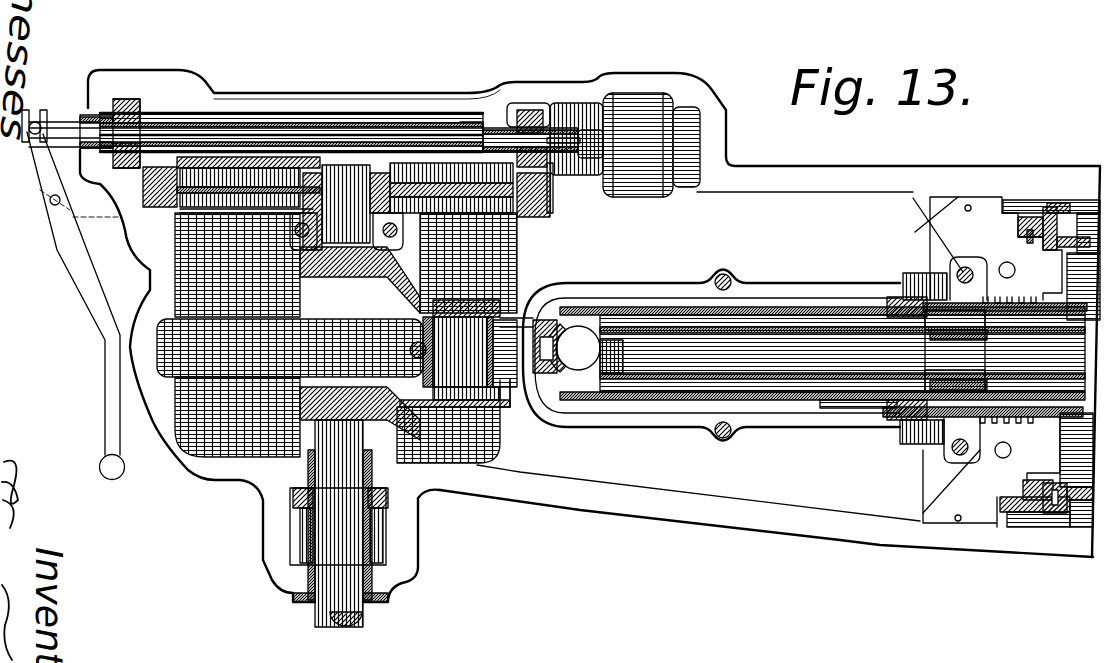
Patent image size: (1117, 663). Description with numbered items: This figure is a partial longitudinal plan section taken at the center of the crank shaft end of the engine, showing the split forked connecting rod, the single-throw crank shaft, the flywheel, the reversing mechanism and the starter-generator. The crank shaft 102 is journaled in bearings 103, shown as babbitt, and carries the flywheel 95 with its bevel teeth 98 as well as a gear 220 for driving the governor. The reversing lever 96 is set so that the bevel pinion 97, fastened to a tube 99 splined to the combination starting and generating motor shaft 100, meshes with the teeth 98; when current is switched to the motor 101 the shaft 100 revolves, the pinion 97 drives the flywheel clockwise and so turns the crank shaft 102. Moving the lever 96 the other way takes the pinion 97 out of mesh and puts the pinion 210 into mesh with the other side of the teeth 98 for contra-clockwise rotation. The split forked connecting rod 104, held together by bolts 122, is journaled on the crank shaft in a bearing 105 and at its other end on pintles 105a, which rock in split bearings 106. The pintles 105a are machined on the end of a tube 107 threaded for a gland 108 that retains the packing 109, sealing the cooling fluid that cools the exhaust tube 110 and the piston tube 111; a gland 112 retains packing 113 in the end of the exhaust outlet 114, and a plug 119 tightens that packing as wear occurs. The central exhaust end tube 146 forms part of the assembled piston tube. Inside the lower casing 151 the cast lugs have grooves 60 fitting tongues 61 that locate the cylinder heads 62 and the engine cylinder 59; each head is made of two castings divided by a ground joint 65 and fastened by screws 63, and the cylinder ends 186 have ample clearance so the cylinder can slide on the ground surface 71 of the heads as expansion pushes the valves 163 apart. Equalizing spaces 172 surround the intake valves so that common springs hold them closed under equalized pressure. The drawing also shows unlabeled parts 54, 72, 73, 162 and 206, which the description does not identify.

The frame bar 54 is at (766, 363).
The engine cylinder 59 is at (1051, 395).
The grooves 60 is at (920, 214).
The tongues 61 is at (930, 235).
The cylinder heads 62 is at (930, 481).
The machine screws 63 is at (971, 347).
The ground joint 65 is at (995, 465).
The ground surface 71 is at (963, 501).
The aperture 72 is at (1022, 282).
The serrations 73 is at (1015, 435).
The flywheel 95 is at (346, 203).
The reversing lever 96 is at (76, 301).
The bevel pinion 97 is at (555, 121).
The bevel teeth 98 is at (549, 185).
The tube 99 is at (291, 114).
The motor shaft 100 is at (535, 115).
The motor 101 is at (651, 124).
The crank shaft 102 is at (337, 403).
The bearings 103 is at (331, 406).
The split forked connecting rod 104 is at (711, 359).
The bearing 105 is at (527, 413).
The pintles 105a is at (898, 359).
The split bearings 106 is at (871, 363).
The tube 107 is at (958, 303).
The gland 108 is at (848, 411).
The packing 109 is at (964, 418).
The exhaust tube 110 is at (810, 376).
The piston tube 111 is at (1009, 290).
The gland 112 is at (983, 374).
The packing 113 is at (930, 351).
The exhaust outlet 114 is at (986, 357).
The plug 119 is at (526, 345).
The bolts 122 is at (680, 343).
The central exhaust end tube 146 is at (842, 353).
The lower casing 151 is at (698, 507).
The bolt 162 is at (1060, 518).
The valves 163 is at (1039, 458).
The equalizing spaces 172 is at (1026, 251).
The cylinder ends 186 is at (1035, 525).
The ball joint 206 is at (562, 318).
The pinion 210 is at (95, 124).
The gear 220 is at (376, 526).